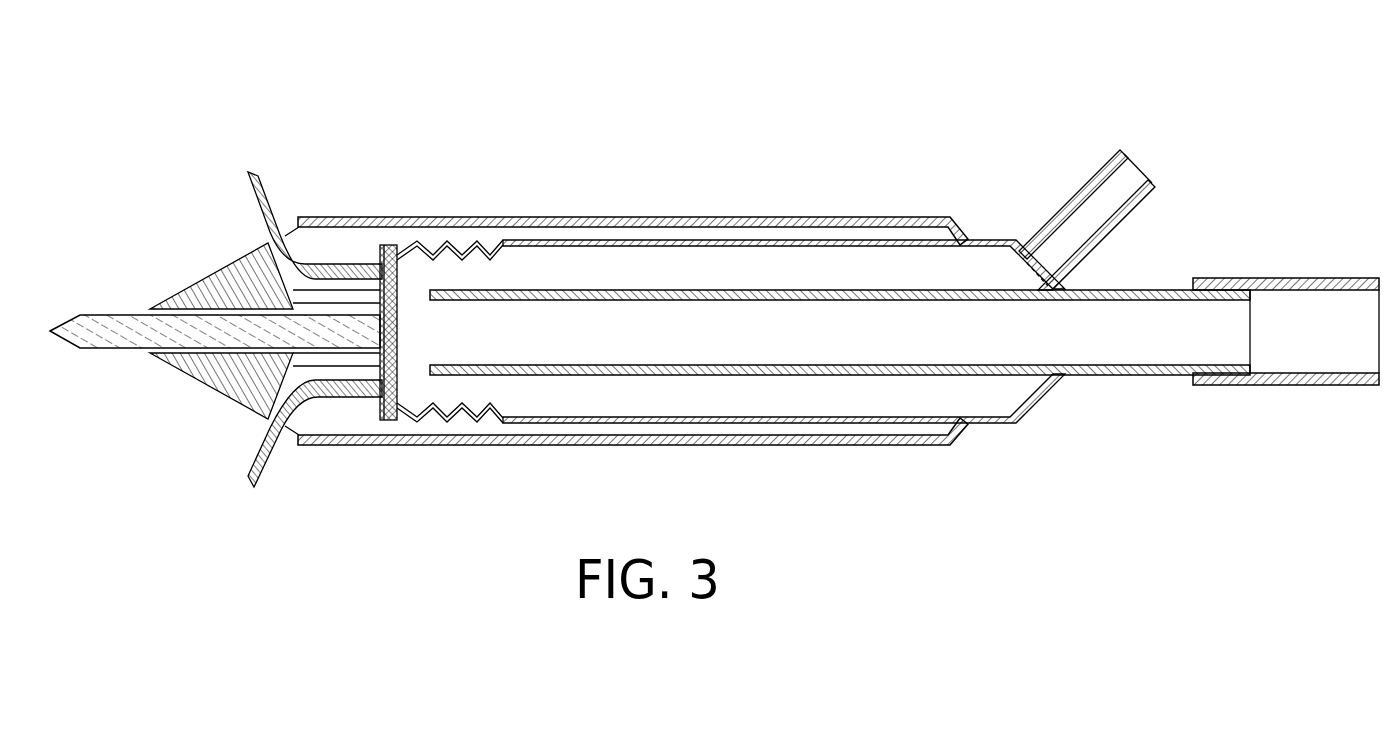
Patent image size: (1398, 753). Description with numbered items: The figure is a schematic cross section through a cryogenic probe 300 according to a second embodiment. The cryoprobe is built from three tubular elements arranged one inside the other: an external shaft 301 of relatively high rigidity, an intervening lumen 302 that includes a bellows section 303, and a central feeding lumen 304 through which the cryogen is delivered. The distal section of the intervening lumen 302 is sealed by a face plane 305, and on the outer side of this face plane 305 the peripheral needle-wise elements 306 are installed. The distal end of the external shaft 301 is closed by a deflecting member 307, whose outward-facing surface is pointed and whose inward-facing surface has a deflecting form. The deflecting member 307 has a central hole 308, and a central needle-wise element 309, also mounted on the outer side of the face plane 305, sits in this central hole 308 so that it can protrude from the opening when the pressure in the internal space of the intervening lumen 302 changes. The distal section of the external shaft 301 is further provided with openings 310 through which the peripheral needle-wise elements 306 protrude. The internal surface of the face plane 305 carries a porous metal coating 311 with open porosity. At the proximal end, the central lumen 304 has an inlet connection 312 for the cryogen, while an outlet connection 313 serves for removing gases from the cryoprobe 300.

The cryogenic probe 300 is at (580, 183).
The external shaft 301 is at (647, 218).
The intervening lumen 302 is at (787, 240).
The bellows section 303 is at (447, 252).
The central feeding lumen 304 is at (895, 377).
The face plane 305 is at (380, 248).
The peripheral needle-wise elements 306 is at (256, 180).
The deflecting member 307 is at (187, 372).
The central hole 308 is at (163, 300).
The central needle-wise element 309 is at (98, 315).
The openings 310 is at (290, 423).
The porous metal coating 311 is at (397, 393).
The inlet connection 312 is at (1258, 278).
The outlet connection 313 is at (1083, 178).